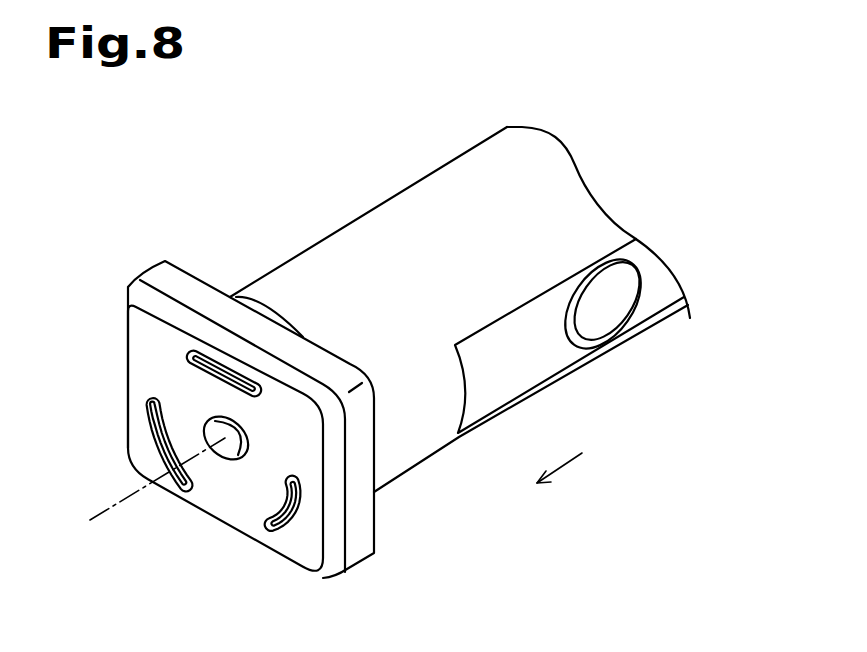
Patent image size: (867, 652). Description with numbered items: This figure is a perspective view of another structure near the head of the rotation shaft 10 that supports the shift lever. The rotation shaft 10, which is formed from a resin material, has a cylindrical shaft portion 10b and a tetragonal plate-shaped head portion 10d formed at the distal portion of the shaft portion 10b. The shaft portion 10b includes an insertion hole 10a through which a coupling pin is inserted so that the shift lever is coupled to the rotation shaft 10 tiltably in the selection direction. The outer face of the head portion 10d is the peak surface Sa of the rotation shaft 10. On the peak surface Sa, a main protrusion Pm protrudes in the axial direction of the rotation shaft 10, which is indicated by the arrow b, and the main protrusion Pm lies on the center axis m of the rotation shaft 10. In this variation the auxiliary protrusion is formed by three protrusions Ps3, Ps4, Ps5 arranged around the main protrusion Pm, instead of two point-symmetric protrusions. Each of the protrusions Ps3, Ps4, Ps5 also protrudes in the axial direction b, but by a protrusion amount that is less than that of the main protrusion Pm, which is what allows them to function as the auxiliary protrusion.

The rotation shaft 10 is at (262, 202).
The insertion hole 10a is at (572, 297).
The shaft portion 10b is at (364, 210).
The head portion 10d is at (199, 281).
The peak surface Sa is at (213, 497).
The protrusion Ps3 is at (153, 437).
The protrusion Ps4 is at (187, 356).
The protrusion Ps5 is at (292, 530).
The main protrusion Pm is at (207, 426).
The center axis m is at (100, 520).
The axial direction b is at (559, 458).